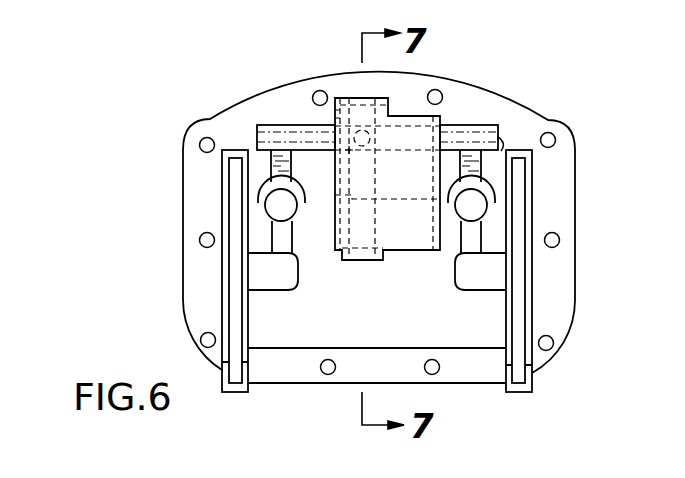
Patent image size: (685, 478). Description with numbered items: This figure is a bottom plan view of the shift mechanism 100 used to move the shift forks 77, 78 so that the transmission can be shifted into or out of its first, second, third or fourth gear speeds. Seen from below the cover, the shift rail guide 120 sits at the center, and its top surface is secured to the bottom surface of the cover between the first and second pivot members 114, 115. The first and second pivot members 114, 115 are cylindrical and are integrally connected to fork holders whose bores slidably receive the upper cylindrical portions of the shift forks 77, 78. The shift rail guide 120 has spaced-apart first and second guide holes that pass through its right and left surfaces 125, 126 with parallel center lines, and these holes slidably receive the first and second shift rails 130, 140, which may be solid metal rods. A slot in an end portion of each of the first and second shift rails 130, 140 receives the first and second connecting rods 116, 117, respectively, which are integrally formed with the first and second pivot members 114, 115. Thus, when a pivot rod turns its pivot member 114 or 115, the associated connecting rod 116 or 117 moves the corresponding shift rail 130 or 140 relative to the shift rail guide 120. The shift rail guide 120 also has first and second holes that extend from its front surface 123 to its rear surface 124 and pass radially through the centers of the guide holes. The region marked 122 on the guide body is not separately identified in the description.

The shift mechanism 100 is at (562, 103).
The shift fork 77 is at (532, 277).
The shift fork 78 is at (222, 291).
The first pivot member 114 is at (472, 208).
The second pivot member 115 is at (290, 208).
The first connecting rod 116 is at (480, 165).
The second connecting rod 117 is at (270, 162).
The shift rail guide 120 is at (396, 258).
The central block 122 is at (428, 188).
The front surface 123 is at (366, 261).
The rear surface 124 is at (386, 100).
The right surface 125 is at (333, 117).
The left surface 126 is at (450, 226).
The first shift rail 130 is at (299, 138).
The second shift rail 140 is at (450, 133).